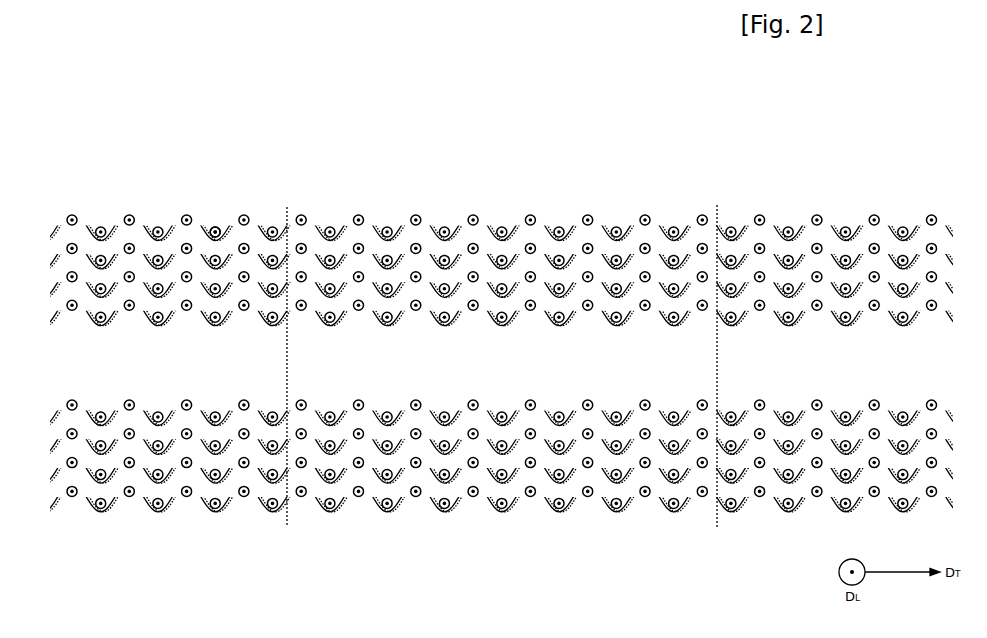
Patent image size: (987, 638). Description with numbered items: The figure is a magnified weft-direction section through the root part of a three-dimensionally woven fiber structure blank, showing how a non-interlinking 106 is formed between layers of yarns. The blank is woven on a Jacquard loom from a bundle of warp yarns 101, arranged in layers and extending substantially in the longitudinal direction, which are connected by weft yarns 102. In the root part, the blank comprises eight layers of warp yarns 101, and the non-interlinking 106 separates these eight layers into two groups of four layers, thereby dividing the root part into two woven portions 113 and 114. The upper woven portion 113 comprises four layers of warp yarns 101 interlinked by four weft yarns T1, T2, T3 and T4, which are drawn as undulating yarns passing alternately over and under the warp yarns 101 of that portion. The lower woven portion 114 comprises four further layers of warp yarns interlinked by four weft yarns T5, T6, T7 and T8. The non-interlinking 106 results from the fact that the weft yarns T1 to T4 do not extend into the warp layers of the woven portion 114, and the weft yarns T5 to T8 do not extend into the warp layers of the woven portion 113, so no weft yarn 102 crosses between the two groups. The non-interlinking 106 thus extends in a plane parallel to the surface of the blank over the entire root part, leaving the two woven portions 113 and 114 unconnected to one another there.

The warp yarns 101 is at (188, 206).
The weft yarns 102 is at (117, 242).
The non-interlinking 106 is at (503, 368).
The woven portion 113 is at (488, 257).
The woven portion 114 is at (488, 481).
The weft yarn T1 is at (475, 226).
The weft yarn T2 is at (488, 254).
The weft yarn T3 is at (488, 282).
The weft yarn T4 is at (488, 311).
The weft yarn T5 is at (488, 411).
The weft yarn T6 is at (488, 439).
The weft yarn T7 is at (488, 468).
The weft yarn T8 is at (488, 497).